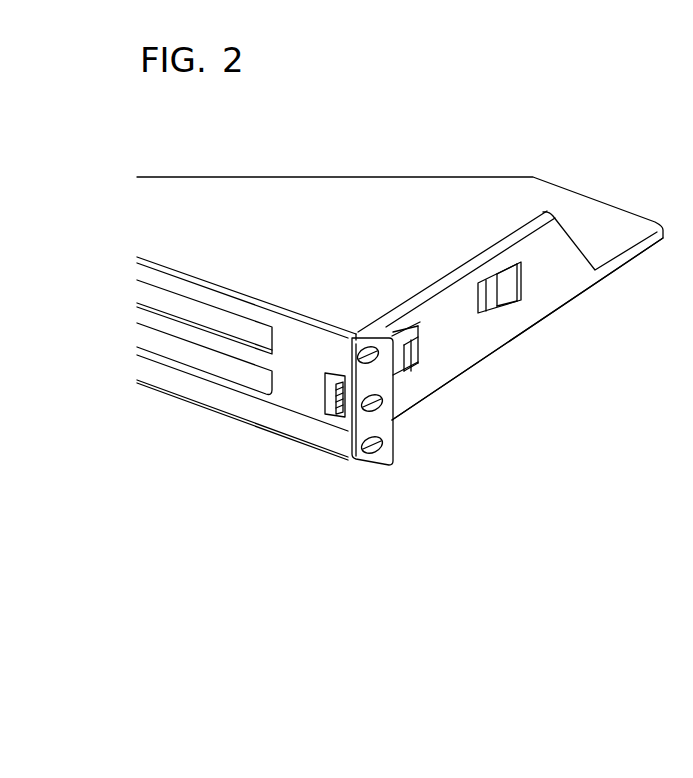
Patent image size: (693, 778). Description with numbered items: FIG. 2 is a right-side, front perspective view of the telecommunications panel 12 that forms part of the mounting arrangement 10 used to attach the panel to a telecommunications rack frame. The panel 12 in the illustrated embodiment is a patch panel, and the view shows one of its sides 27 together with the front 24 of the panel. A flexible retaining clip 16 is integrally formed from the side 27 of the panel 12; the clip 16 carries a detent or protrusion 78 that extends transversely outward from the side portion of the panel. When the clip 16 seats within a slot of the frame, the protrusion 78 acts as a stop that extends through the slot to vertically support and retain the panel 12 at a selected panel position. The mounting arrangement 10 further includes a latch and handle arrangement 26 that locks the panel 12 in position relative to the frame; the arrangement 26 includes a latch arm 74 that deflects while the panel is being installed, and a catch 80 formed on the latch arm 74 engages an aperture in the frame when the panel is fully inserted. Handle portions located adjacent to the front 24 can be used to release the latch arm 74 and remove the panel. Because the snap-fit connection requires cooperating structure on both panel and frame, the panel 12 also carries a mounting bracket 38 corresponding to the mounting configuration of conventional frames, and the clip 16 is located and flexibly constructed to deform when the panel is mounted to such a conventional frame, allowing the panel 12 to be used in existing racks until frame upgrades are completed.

The mounting arrangement 10 is at (535, 395).
The telecommunications panel 12 is at (264, 234).
The retaining clip 16 is at (477, 271).
The front 24 is at (194, 418).
The latch and handle arrangement 26 is at (312, 417).
The side 27 is at (447, 348).
The mounting bracket 38 is at (367, 430).
The latch arm 74 is at (372, 403).
The protrusion 78 is at (510, 299).
The catch 80 is at (422, 374).